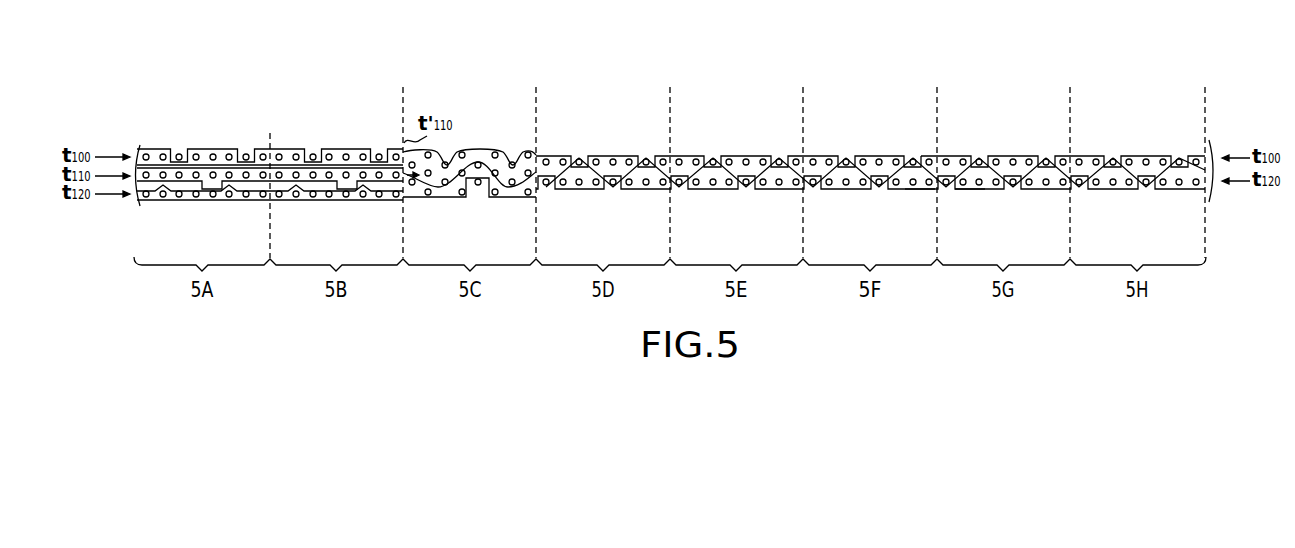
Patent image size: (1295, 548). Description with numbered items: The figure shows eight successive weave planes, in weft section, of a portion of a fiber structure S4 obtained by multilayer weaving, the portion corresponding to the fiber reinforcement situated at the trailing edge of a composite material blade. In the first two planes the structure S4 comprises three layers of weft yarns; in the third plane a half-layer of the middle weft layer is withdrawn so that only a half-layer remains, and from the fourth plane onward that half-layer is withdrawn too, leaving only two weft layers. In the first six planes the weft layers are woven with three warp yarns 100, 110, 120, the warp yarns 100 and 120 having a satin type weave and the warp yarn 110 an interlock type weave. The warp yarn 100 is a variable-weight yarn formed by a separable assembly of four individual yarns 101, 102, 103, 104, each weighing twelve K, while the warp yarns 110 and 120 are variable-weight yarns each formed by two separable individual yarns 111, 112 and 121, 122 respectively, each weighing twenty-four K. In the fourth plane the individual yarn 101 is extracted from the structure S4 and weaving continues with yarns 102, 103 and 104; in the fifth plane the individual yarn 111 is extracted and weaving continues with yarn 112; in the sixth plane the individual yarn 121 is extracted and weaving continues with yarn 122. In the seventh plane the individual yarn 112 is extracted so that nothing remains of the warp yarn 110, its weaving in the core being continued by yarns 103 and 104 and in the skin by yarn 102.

The warp yarn 100 is at (620, 154).
The individual yarn 101 is at (682, 86).
The individual yarn 102 is at (1100, 156).
The individual yarn 103 is at (1029, 156).
The individual yarn 104 is at (1101, 180).
The warp yarn 110 is at (770, 154).
The individual yarn 111 is at (815, 82).
The individual yarn 112 is at (838, 156).
The warp yarn 120 is at (188, 200).
The individual yarn 121 is at (921, 190).
The individual yarn 122 is at (966, 190).
The fiber structure S4 is at (459, 64).